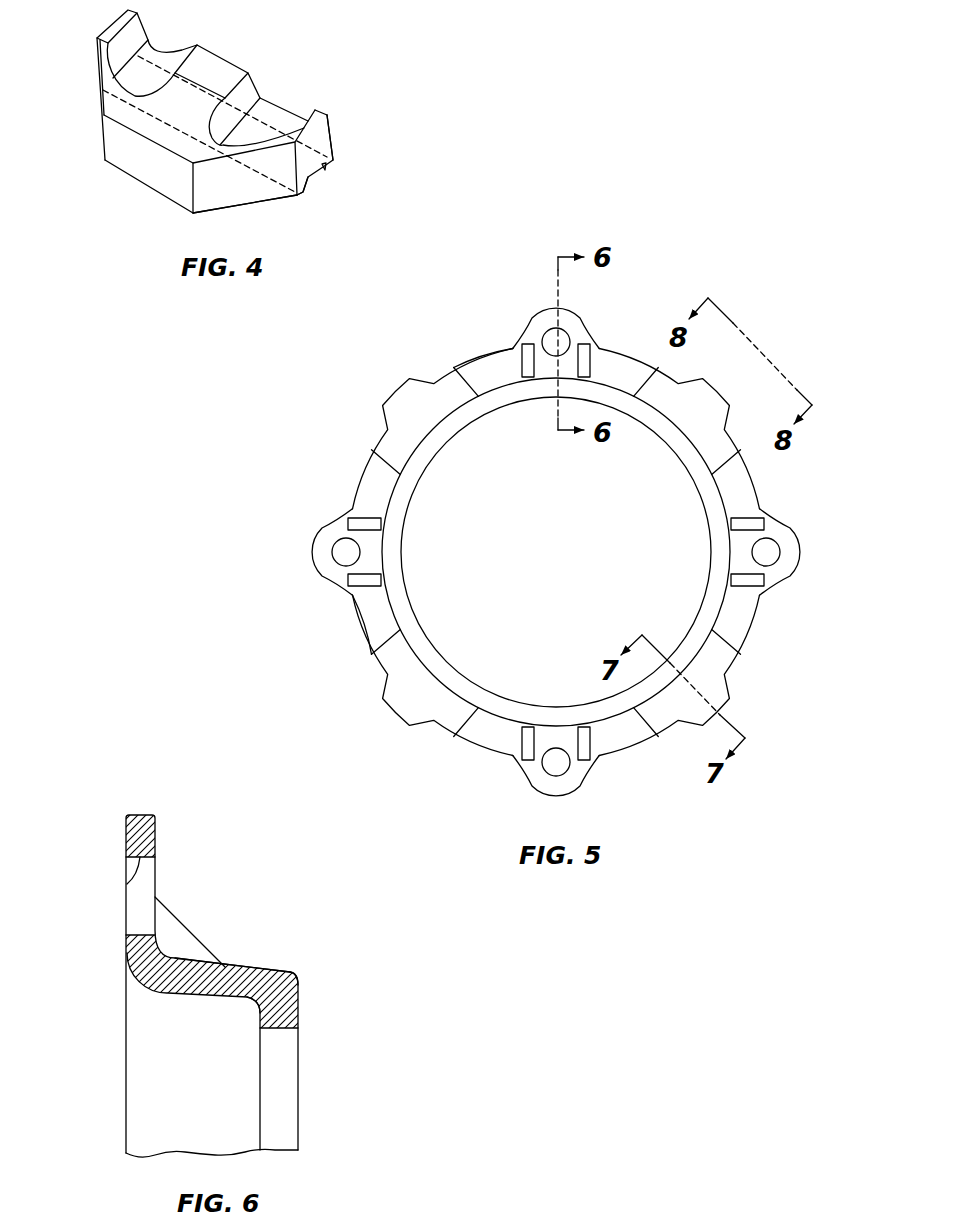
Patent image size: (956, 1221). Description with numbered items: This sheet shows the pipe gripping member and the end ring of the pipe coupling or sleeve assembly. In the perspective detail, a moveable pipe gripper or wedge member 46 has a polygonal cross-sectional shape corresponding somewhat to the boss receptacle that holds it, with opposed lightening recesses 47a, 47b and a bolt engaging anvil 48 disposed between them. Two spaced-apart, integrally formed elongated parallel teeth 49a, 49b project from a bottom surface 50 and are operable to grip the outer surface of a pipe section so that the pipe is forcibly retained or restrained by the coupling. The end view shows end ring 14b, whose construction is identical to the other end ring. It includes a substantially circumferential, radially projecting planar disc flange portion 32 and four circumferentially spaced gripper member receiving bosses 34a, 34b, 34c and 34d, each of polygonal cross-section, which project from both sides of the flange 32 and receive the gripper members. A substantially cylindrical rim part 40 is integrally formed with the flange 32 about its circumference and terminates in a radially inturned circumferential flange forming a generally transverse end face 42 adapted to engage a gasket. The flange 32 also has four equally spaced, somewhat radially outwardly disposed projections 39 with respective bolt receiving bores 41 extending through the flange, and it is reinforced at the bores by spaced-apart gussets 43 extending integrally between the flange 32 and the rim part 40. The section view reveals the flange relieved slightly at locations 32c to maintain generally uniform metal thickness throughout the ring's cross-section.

In FIG. 5, the end ring 14b is at (480, 368).
In FIG. 6, the end ring 14b is at (290, 968).
In FIG. 5, the flange portion 32 is at (488, 743).
In FIG. 6, the flange portion 32 is at (155, 840).
In FIG. 6, the relieved locations 32c is at (252, 1010).
In FIG. 5, the gripper member receiving boss 34a is at (432, 422).
In FIG. 5, the gripper member receiving boss 34b is at (428, 687).
In FIG. 5, the gripper member receiving boss 34c is at (728, 655).
In FIG. 5, the gripper member receiving boss 34d is at (682, 423).
In FIG. 5, the projections 39 is at (573, 317).
In FIG. 6, the projections 39 is at (127, 842).
In FIG. 5, the cylindrical rim part 40 is at (357, 623).
In FIG. 6, the cylindrical rim part 40 is at (205, 963).
In FIG. 5, the bolt receiving bores 41 is at (560, 337).
In FIG. 6, the bolt receiving bores 41 is at (140, 866).
In FIG. 5, the transverse end face 42 is at (413, 640).
In FIG. 6, the transverse end face 42 is at (300, 1003).
In FIG. 5, the gussets 43 is at (517, 348).
In FIG. 6, the gussets 43 is at (182, 933).
In FIG. 4, the pipe gripper or wedge member 46 is at (95, 107).
In FIG. 4, the lightening recess 47a is at (153, 55).
In FIG. 4, the lightening recess 47b is at (272, 115).
In FIG. 4, the bolt engaging anvil 48 is at (220, 65).
In FIG. 4, the tooth 49a is at (332, 163).
In FIG. 4, the tooth 49b is at (307, 192).
In FIG. 4, the bottom surface 50 is at (260, 203).